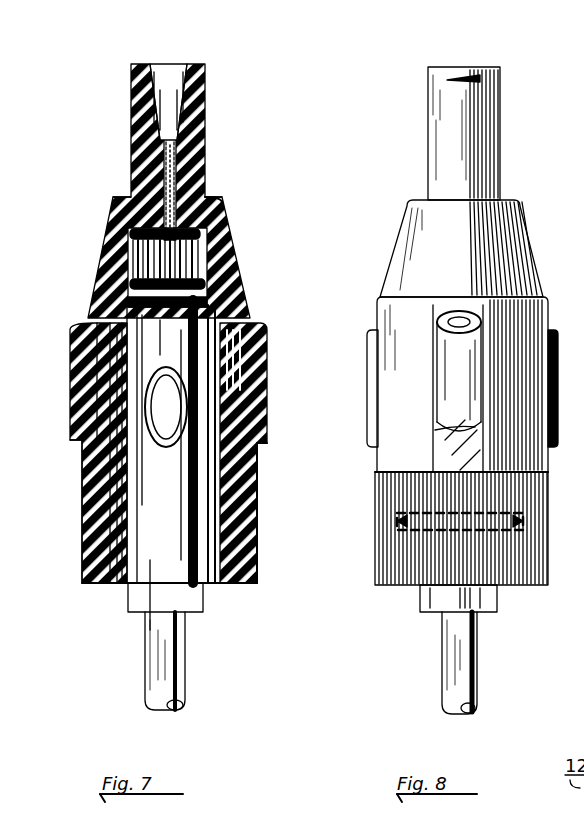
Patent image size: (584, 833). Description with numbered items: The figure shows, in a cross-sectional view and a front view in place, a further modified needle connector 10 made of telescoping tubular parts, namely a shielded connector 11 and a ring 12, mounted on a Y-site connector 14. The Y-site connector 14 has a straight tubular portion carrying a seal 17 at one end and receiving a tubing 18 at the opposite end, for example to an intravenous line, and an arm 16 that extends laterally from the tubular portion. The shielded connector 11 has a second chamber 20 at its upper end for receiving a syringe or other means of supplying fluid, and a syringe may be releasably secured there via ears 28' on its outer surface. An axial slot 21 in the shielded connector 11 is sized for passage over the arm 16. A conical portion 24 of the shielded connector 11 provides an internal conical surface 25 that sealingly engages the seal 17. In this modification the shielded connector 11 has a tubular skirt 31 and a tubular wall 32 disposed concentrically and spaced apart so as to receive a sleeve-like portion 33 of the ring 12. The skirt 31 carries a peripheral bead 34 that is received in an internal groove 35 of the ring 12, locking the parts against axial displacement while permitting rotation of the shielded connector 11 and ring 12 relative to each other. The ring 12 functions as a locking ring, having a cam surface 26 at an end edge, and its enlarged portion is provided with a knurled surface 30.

In FIG. 7, the needle connector 10 is at (54, 100).
In FIG. 8, the needle connector 10 is at (380, 125).
In FIG. 7, the shielded connector 11 is at (113, 230).
In FIG. 8, the shielded connector 11 is at (508, 167).
In FIG. 7, the ring 12 is at (80, 493).
In FIG. 8, the ring 12 is at (547, 543).
In FIG. 7, the Y-site connector 14 is at (190, 143).
In FIG. 8, the Y-site connector 14 is at (488, 618).
In FIG. 7, the arm 16 is at (143, 388).
In FIG. 8, the arm 16 is at (475, 325).
In FIG. 7, the seal 17 is at (233, 247).
In FIG. 7, the tubing 18 is at (183, 683).
In FIG. 8, the tubing 18 is at (477, 693).
In FIG. 7, the second chamber 20 is at (183, 64).
In FIG. 8, the axial slot 21 is at (437, 460).
In FIG. 7, the conical portion 24 is at (213, 200).
In FIG. 7, the internal conical surface 25 is at (130, 267).
In FIG. 8, the cam surface 26 is at (453, 412).
In FIG. 8, the ears 28' is at (471, 52).
In FIG. 8, the knurled surface 30 is at (377, 527).
In FIG. 7, the tubular skirt 31 is at (263, 447).
In FIG. 7, the tubular wall 32 is at (263, 387).
In FIG. 7, the sleeve-like portion 33 is at (250, 337).
In FIG. 7, the peripheral bead 34 is at (80, 510).
In FIG. 7, the internal groove 35 is at (233, 503).